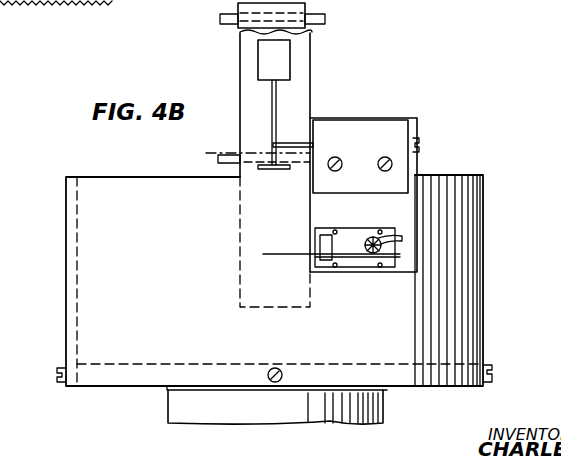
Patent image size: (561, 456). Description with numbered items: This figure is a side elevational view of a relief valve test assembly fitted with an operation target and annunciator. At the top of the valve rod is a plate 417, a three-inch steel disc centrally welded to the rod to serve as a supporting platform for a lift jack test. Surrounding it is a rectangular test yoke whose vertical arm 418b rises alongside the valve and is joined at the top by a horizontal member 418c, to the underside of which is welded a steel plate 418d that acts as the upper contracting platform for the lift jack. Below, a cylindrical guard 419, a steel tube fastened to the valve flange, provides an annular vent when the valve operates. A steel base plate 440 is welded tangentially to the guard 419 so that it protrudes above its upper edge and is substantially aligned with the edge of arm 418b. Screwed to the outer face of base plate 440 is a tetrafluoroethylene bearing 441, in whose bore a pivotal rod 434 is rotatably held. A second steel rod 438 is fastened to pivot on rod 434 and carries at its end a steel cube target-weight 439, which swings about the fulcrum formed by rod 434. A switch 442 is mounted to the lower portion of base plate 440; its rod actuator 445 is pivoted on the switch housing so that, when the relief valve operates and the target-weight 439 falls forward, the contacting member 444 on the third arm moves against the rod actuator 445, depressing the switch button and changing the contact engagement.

The plate 417 is at (220, 157).
The vertical arm 418b is at (311, 80).
The horizontal member 418c is at (306, 0).
The steel plate 418d is at (229, 27).
The cylindrical guard 419 is at (66, 217).
The pivotal rod 434 is at (291, 143).
The second steel rod 438 is at (272, 101).
The target-weight 439 is at (262, 53).
The base plate 440 is at (416, 161).
The bearing 441 is at (392, 135).
The switch 442 is at (356, 279).
The contacting member 444 is at (263, 172).
The rod actuator 445 is at (281, 253).